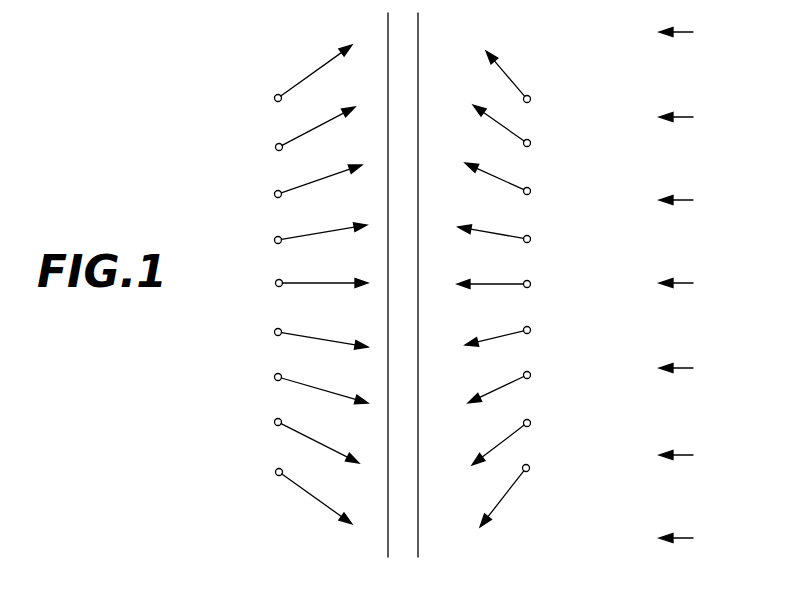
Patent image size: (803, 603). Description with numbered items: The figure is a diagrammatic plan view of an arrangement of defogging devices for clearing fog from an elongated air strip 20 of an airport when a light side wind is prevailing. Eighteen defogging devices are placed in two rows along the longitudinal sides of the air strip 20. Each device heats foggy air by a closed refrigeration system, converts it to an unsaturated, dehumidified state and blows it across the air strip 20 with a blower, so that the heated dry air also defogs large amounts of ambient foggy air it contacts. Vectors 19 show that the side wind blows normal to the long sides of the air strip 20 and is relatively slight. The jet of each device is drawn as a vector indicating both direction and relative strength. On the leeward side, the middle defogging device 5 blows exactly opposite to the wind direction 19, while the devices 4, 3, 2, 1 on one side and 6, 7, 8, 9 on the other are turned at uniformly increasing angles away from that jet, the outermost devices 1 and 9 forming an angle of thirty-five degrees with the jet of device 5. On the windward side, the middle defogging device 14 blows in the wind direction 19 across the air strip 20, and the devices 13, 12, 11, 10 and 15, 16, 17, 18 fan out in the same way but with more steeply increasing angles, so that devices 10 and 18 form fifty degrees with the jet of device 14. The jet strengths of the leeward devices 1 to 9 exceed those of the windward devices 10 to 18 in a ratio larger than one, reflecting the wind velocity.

The defogging device 1 is at (302, 77).
The defogging device 2 is at (301, 132).
The defogging device 3 is at (306, 184).
The defogging device 4 is at (309, 236).
The middle defogging device 5 is at (310, 284).
The defogging device 6 is at (310, 335).
The defogging device 7 is at (310, 385).
The defogging device 8 is at (305, 437).
The defogging device 9 is at (302, 492).
The defogging device 10 is at (523, 80).
The defogging device 11 is at (516, 129).
The defogging device 12 is at (512, 182).
The defogging device 13 is at (509, 237).
The middle defogging device 14 is at (508, 284).
The defogging device 15 is at (512, 332).
The defogging device 16 is at (514, 384).
The defogging device 17 is at (516, 438).
The defogging device 18 is at (520, 492).
The wind vectors 19 is at (678, 303).
The air strip 20 is at (410, 38).